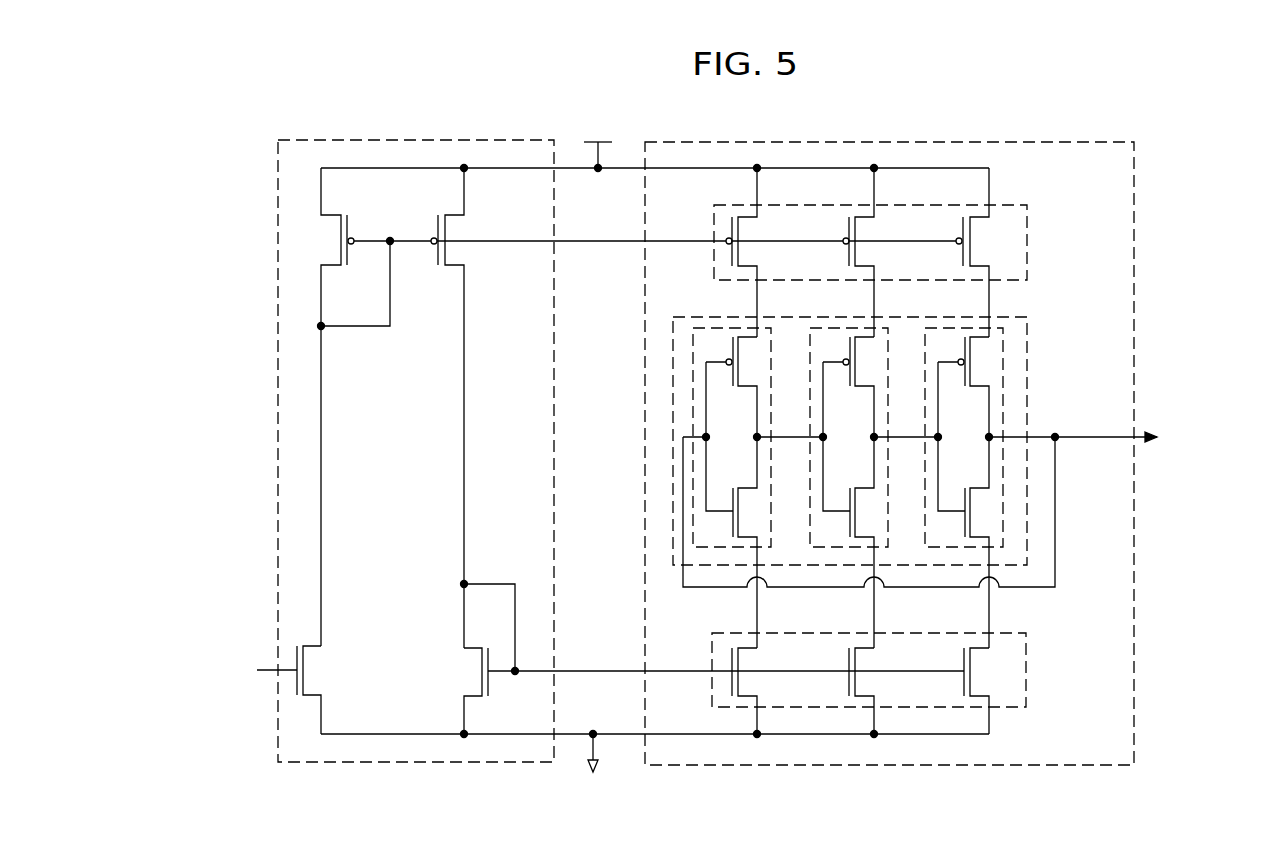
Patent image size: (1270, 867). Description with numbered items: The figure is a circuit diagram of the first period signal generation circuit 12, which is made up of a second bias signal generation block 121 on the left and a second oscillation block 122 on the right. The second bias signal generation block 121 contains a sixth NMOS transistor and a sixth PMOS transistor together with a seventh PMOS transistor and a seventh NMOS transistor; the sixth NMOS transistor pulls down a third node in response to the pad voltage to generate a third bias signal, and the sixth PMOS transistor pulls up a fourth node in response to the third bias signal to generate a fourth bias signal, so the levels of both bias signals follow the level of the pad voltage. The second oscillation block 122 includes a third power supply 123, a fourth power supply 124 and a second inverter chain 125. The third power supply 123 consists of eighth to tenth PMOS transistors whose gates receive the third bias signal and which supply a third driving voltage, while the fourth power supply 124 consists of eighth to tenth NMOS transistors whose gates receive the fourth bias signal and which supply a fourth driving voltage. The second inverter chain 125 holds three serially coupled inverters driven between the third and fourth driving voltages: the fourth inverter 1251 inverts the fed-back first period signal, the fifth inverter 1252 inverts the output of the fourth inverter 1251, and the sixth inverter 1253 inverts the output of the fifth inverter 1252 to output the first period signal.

The first period signal generation circuit 12 is at (334, 97).
The second bias signal generation block 121 is at (487, 138).
The second oscillation block 122 is at (1068, 141).
The third power supply 123 is at (1027, 243).
The fourth power supply 124 is at (1026, 672).
The second inverter chain 125 is at (1027, 333).
The fourth inverter 1251 is at (712, 327).
The fifth inverter 1252 is at (1003, 370).
The sixth inverter 1253 is at (888, 398).